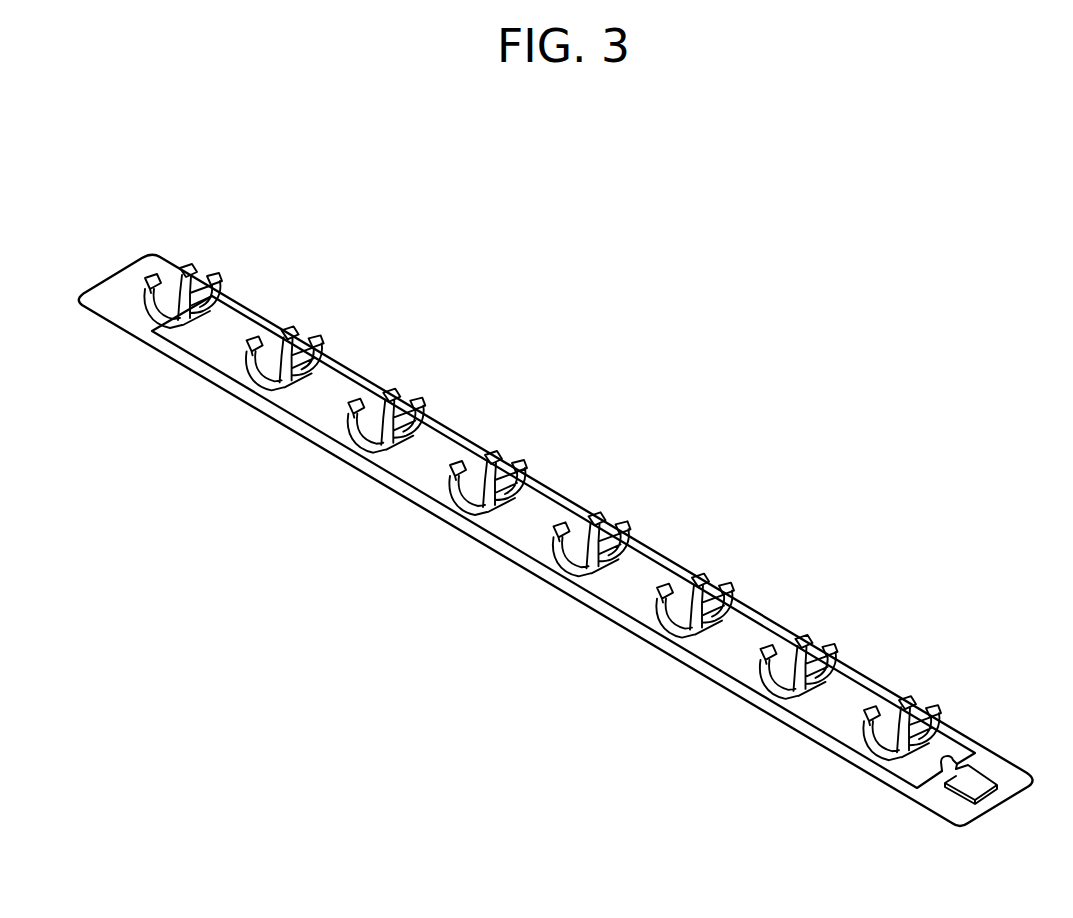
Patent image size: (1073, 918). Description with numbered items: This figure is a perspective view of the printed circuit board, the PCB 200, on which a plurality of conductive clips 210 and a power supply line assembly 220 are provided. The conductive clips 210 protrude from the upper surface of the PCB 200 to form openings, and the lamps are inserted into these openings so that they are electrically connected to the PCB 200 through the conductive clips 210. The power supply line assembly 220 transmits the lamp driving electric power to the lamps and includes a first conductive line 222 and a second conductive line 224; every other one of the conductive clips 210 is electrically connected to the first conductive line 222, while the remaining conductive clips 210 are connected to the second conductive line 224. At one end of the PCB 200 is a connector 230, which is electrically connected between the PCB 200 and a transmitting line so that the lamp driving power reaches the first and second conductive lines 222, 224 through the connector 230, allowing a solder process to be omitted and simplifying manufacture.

The printed circuit board 200 is at (634, 494).
The conductive clips 210 is at (905, 691).
The power supply line assembly 220 is at (877, 866).
The first conductive line 222 is at (937, 775).
The second conductive line 224 is at (885, 779).
The connector 230 is at (977, 778).